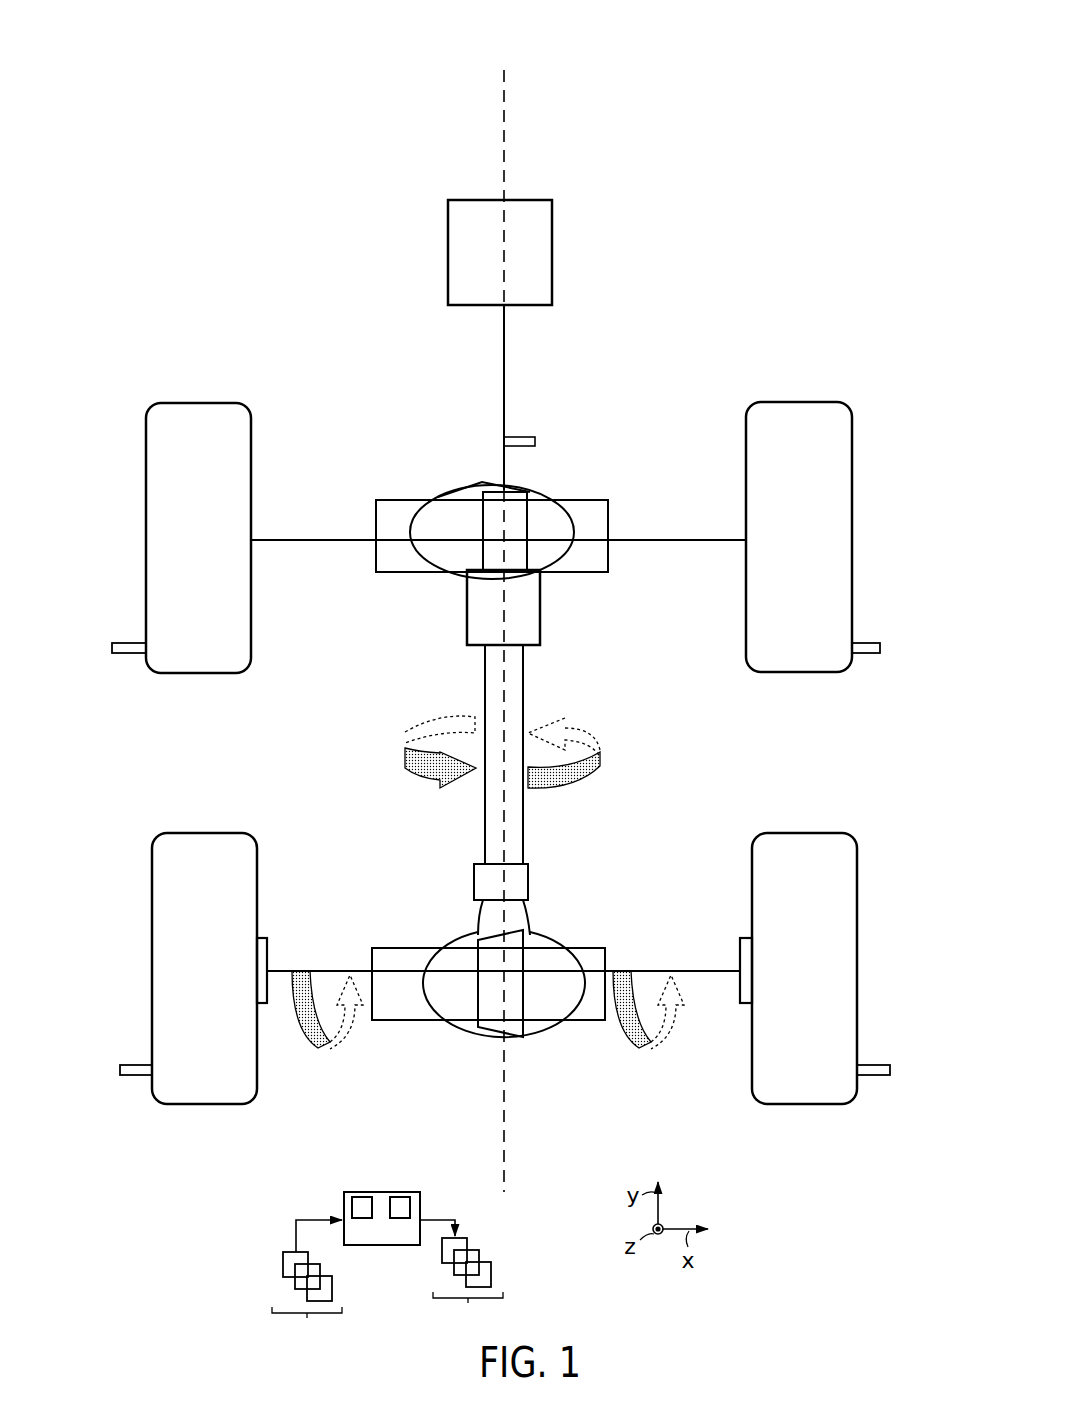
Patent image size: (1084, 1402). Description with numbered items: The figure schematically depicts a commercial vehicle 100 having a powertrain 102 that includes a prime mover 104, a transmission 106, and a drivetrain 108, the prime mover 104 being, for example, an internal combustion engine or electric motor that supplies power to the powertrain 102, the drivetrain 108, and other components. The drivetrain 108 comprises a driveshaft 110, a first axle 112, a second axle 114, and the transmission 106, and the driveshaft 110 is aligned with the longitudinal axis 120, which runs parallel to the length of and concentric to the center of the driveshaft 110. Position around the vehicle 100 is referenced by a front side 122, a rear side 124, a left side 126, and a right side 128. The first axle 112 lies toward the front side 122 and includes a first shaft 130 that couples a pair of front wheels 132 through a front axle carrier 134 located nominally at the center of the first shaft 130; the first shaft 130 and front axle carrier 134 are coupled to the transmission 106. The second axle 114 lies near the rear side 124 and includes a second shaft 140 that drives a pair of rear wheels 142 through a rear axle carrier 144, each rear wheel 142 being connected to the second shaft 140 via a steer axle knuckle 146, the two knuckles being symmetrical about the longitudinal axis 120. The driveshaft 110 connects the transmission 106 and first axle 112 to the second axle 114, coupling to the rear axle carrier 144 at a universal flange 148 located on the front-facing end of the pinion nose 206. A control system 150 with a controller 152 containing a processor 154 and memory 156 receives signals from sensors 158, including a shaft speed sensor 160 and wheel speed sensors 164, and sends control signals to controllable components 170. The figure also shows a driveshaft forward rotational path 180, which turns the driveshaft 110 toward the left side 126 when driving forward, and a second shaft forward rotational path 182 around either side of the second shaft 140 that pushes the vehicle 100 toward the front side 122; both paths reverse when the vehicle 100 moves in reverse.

The vehicle 100 is at (806, 82).
The powertrain 102 is at (616, 263).
The prime mover 104 is at (500, 345).
The transmission 106 is at (467, 608).
The drivetrain 108 is at (629, 767).
The driveshaft 110 is at (523, 670).
The first axle 112 is at (457, 406).
The second axle 114 is at (490, 1058).
The longitudinal axis 120 is at (498, 142).
The front side 122 is at (252, 27).
The rear side 124 is at (197, 1374).
The left side 126 is at (74, 769).
The right side 128 is at (915, 769).
The first shaft 130 is at (659, 541).
The front wheels 132 is at (182, 550).
The front axle carrier 134 is at (448, 492).
The second shaft 140 is at (698, 972).
The rear wheels 142 is at (187, 979).
The rear axle carrier 144 is at (443, 940).
The steer axle knuckle 146 is at (273, 948).
The universal flange 148 is at (528, 880).
The control system 150 is at (250, 1213).
The controller 152 is at (382, 1203).
The processor 154 is at (352, 1205).
The memory 156 is at (410, 1205).
The sensors 158 is at (307, 1282).
The shaft speed sensor 160 is at (535, 445).
The wheel speed sensor 164 is at (112, 651).
The controllable components 170 is at (461, 1274).
The driveshaft forward rotational path 180 is at (405, 730).
The second shaft forward rotational path 182 is at (318, 1048).
The pinion nose 206 is at (482, 908).